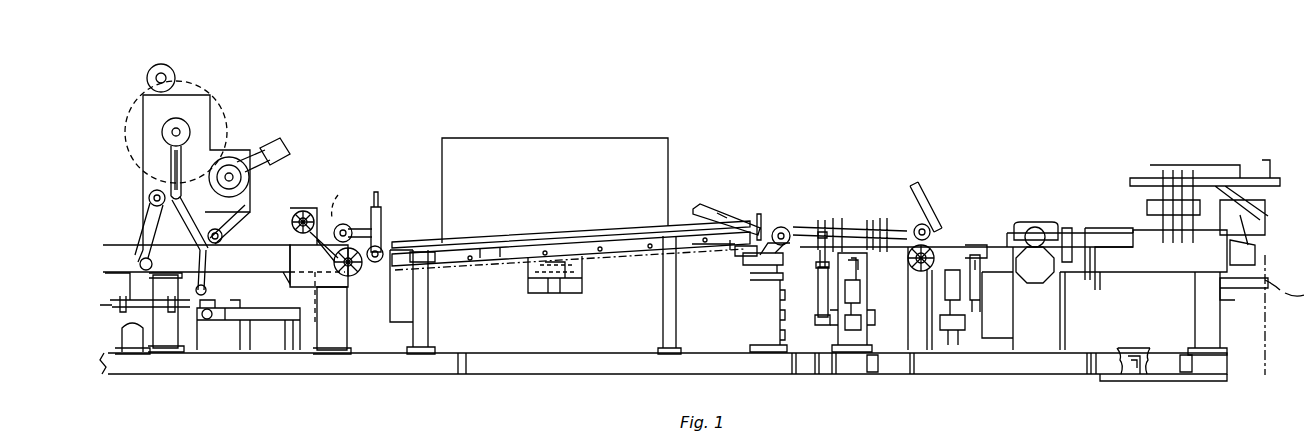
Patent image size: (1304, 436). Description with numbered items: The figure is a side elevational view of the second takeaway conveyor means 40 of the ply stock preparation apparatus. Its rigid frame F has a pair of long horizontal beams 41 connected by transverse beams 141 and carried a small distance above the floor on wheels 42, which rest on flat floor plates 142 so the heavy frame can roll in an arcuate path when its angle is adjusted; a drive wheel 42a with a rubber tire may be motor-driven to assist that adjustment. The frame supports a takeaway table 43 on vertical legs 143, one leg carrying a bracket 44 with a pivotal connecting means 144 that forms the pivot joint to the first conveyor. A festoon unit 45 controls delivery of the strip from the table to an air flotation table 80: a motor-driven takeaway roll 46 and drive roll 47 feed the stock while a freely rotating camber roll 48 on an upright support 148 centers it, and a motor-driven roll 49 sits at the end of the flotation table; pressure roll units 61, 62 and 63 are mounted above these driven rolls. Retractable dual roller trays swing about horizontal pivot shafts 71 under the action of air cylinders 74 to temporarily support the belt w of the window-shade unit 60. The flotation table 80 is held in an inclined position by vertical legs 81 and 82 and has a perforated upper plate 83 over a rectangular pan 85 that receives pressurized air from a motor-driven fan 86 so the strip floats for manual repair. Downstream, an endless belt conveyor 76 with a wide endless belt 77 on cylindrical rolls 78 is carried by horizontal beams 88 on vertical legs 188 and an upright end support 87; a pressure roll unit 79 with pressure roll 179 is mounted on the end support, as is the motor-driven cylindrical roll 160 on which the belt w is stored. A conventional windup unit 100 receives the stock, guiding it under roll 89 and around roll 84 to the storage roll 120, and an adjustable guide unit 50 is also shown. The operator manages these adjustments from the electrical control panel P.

The second conveyor means 40 is at (846, 148).
The horizontal beams 41 is at (265, 373).
The wheels 42 is at (1135, 374).
The drive wheel 42a is at (128, 355).
The takeaway table 43 is at (1130, 272).
The bracket 44 is at (1228, 283).
The festoon unit 45 is at (975, 212).
The takeaway roll 46 is at (1025, 283).
The drive roll 47 is at (915, 270).
The camber roll 48 is at (785, 227).
The motor-driven roll 49 is at (735, 256).
The adjustable guide unit 50 is at (1142, 206).
The window-shade unit 60 is at (315, 205).
The pressure roll unit 61 is at (1055, 226).
The pressure roll unit 62 is at (930, 218).
The pressure roll unit 63 is at (735, 215).
The horizontal pivot shaft 71 is at (852, 225).
The air cylinder 74 is at (818, 292).
The endless belt conveyor 76 is at (338, 280).
The endless belt 77 is at (317, 303).
The cylindrical rolls 78 is at (333, 263).
The pressure roll unit 79 is at (380, 218).
The air flotation table 80 is at (604, 196).
The vertical leg 81 is at (663, 315).
The vertical leg 82 is at (430, 312).
The upper plate 83 is at (545, 238).
The roll 84 is at (252, 158).
The rectangular pan 85 is at (626, 250).
The motor-driven fan 86 is at (568, 293).
The upright end support 87 is at (335, 350).
The horizontal beams 88 is at (130, 250).
The roll 89 is at (222, 235).
The windup unit 100 is at (245, 140).
The storage roll 120 is at (135, 240).
The transverse beams 141 is at (878, 372).
The floor plates 142 is at (1110, 381).
The vertical legs 143 is at (1195, 320).
The pivotal connecting means 144 is at (1268, 276).
The upright support 148 is at (757, 318).
The motor-driven cylindrical roll 160 is at (288, 262).
The pressure roll 179 is at (350, 225).
The vertical legs 188 is at (168, 350).
The belt w is at (339, 196).
The rigid frame F is at (532, 353).
The electrical control panel P is at (668, 138).